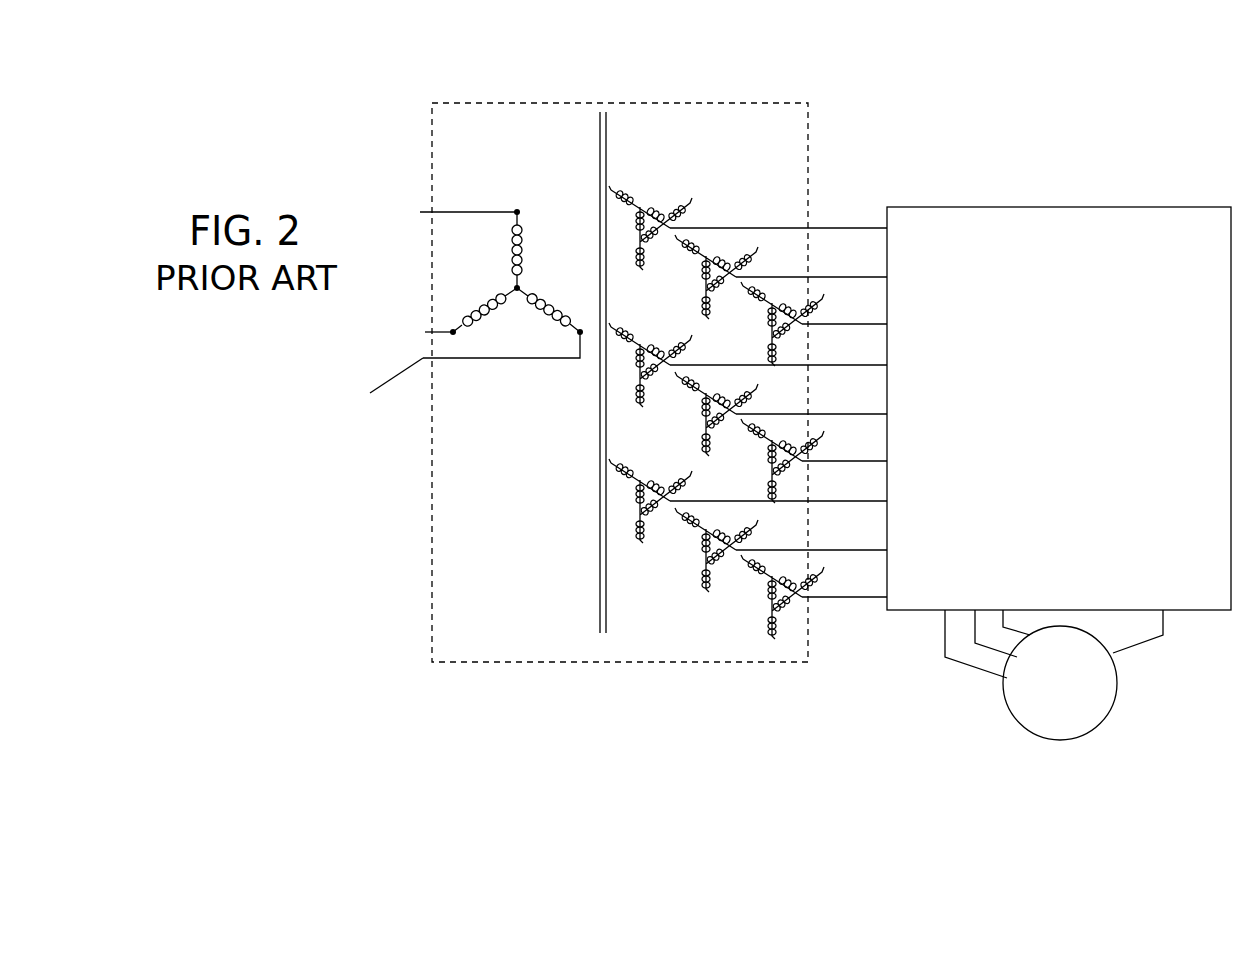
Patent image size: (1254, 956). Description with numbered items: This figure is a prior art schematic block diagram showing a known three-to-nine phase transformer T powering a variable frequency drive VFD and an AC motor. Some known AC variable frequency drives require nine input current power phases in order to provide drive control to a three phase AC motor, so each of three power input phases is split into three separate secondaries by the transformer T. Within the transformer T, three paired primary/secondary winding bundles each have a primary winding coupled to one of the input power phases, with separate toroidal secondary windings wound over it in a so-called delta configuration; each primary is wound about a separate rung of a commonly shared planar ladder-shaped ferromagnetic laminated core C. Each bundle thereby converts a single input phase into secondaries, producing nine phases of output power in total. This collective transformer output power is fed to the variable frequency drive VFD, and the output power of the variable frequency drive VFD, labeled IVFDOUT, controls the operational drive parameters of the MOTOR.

The ferromagnetic laminated core C is at (743, 367).
The 3-9 phase transformer T is at (536, 382).
The variable frequency drive VFD is at (1059, 408).
The AC motor MOTOR is at (1060, 683).
The VFD output current IVFDOUT is at (932, 666).